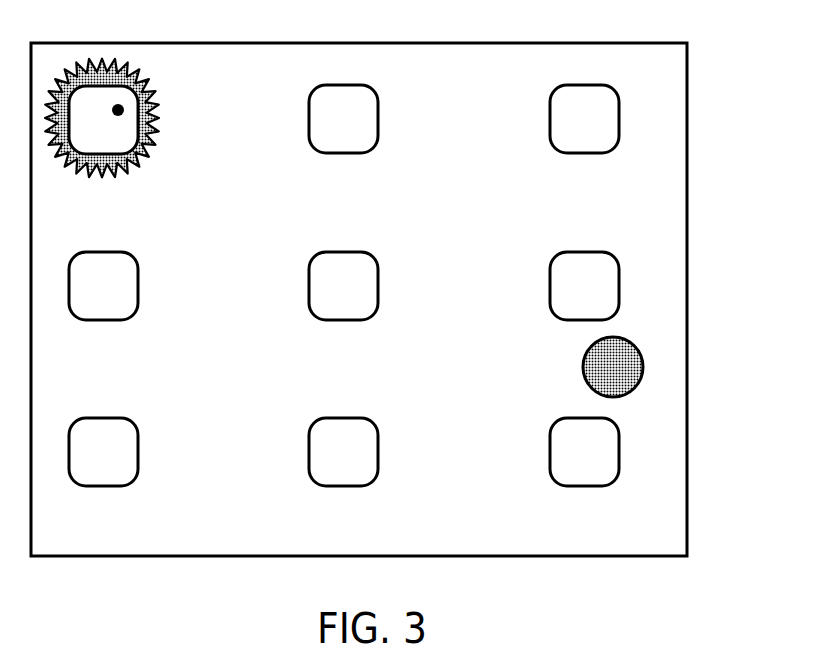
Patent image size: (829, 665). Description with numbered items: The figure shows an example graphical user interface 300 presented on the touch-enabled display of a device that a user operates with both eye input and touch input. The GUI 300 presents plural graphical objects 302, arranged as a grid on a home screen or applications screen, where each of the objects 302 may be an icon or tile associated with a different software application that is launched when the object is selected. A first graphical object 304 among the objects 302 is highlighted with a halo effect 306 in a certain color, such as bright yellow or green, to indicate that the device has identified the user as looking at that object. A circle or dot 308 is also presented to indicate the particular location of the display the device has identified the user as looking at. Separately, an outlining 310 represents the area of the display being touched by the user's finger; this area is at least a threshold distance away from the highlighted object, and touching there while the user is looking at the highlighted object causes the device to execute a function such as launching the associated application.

The graphical user interface 300 is at (699, 54).
The graphical objects 302 is at (584, 154).
The first graphical object 304 is at (112, 154).
The halo effect 306 is at (143, 72).
The circle or dot 308 is at (124, 110).
The outlining 310 is at (582, 367).